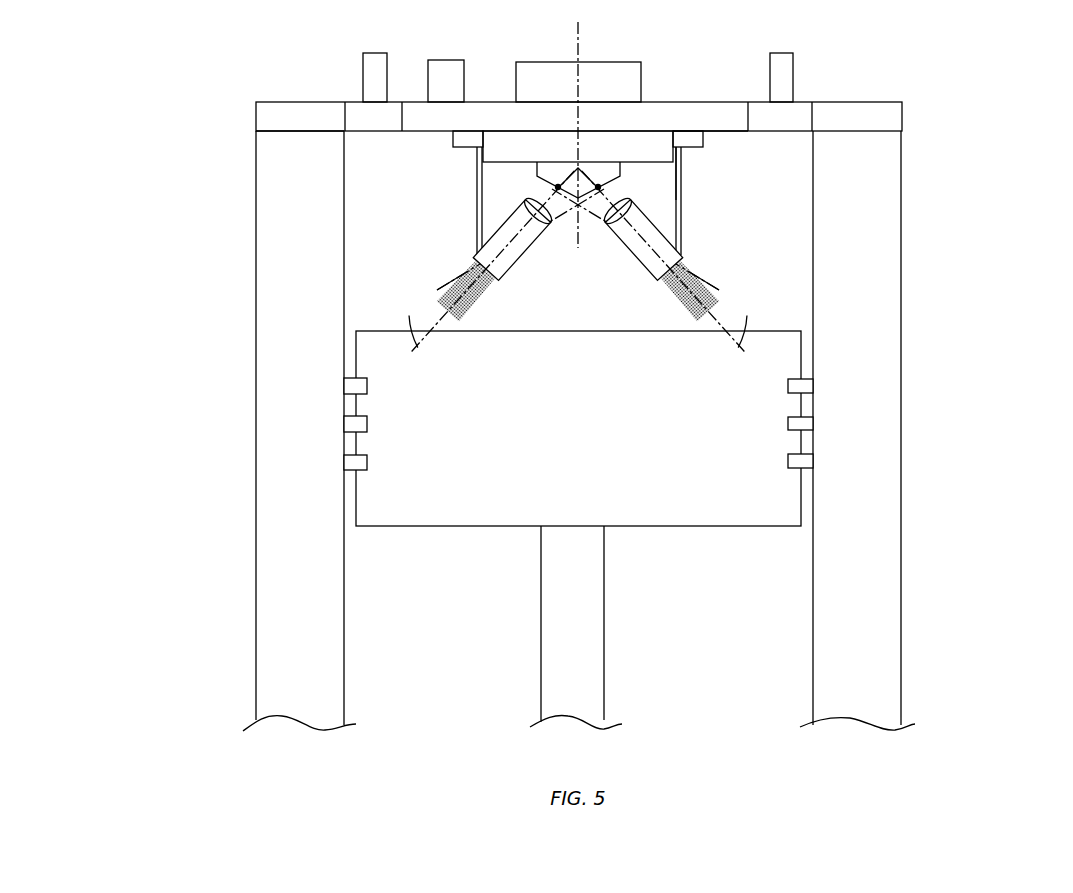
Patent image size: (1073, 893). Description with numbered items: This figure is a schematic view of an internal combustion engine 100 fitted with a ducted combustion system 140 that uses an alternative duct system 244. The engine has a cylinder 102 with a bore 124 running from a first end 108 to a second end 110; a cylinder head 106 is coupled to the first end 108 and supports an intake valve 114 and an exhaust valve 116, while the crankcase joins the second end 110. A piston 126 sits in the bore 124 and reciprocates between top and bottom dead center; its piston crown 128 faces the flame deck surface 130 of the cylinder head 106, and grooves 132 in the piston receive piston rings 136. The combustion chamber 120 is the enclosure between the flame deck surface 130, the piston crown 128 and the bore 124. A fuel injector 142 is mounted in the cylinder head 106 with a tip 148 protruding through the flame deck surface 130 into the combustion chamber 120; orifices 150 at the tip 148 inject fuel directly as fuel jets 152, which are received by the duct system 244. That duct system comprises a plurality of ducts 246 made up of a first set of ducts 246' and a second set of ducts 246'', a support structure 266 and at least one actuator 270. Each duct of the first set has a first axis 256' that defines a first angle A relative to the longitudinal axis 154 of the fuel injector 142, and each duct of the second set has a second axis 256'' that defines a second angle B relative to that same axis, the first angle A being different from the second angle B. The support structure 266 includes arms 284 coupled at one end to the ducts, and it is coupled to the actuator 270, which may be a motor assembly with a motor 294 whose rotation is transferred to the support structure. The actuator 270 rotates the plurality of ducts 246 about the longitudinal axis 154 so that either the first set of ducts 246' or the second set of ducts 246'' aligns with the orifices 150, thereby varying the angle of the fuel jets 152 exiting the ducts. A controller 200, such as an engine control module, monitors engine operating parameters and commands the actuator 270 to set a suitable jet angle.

The internal combustion engine 100 is at (982, 95).
The cylinder 102 is at (254, 431).
The cylinder head 106 is at (256, 115).
The first end 108 is at (256, 140).
The second end 110 is at (256, 700).
The intake valve 114 is at (363, 78).
The exhaust valve 116 is at (793, 80).
The combustion chamber 120 is at (783, 232).
The bore 124 is at (797, 188).
The piston 126 is at (805, 500).
The piston crown 128 is at (788, 320).
The flame deck surface 130 is at (720, 131).
The grooves 132 is at (651, 411).
The piston rings 136 is at (790, 392).
The ducted combustion system 140 is at (740, 212).
The fuel injector 142 is at (641, 78).
The tip 148 is at (575, 222).
The orifices 150 is at (558, 187).
The fuel jets 152 is at (474, 195).
The longitudinal axis 154 is at (578, 40).
The controller 200 is at (440, 60).
The duct system 244 is at (478, 238).
The plurality of ducts 246 is at (519, 225).
The first set of ducts 246' is at (578, 260).
The second set of ducts 246'' is at (592, 239).
The first axis 256' is at (575, 319).
The second axis 256'' is at (571, 271).
The support structure 266 is at (510, 214).
The actuator 270 is at (526, 90).
The arms 284 is at (676, 172).
The motor 294 is at (453, 140).
The first angle A is at (596, 182).
The second angle B is at (585, 228).